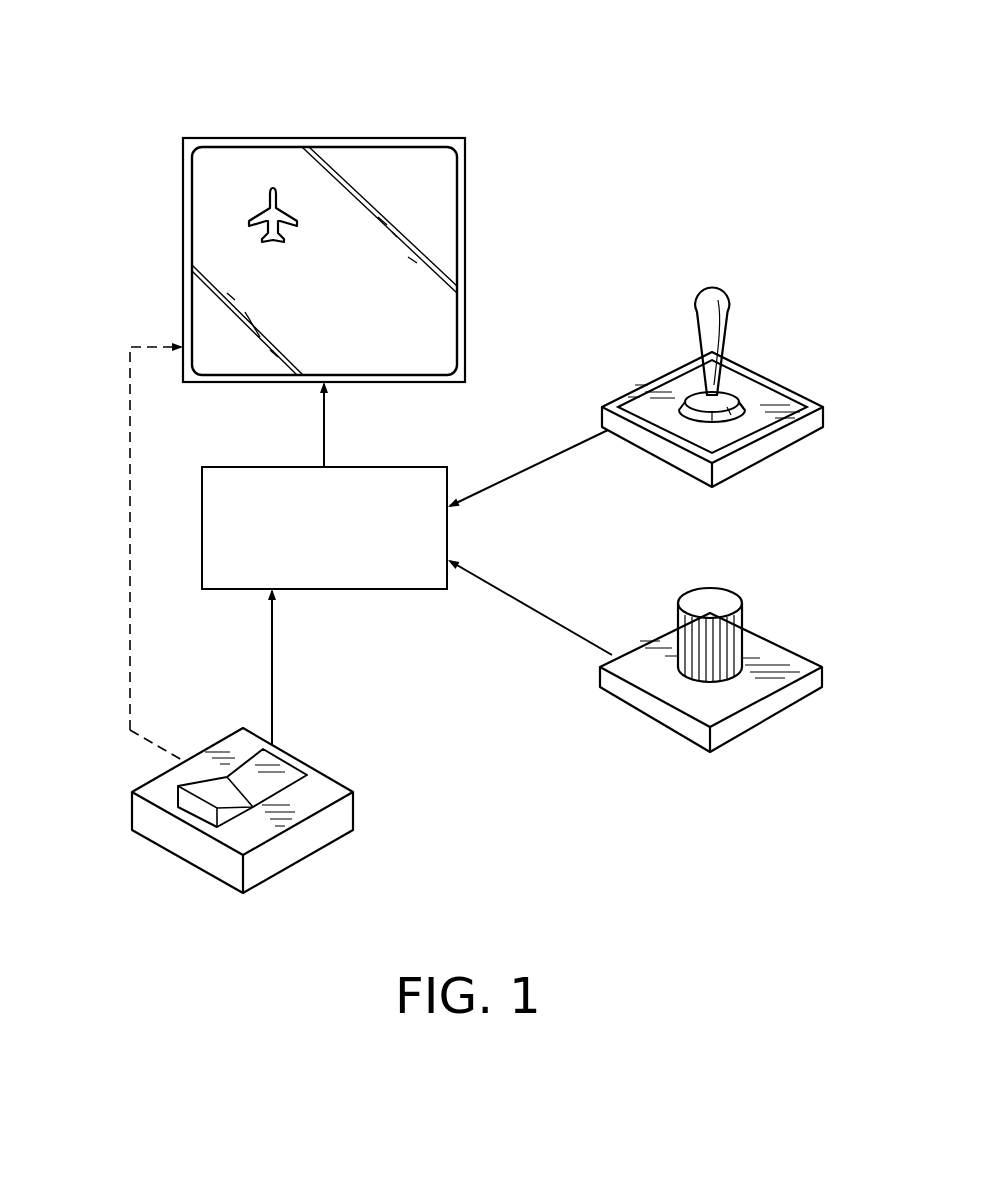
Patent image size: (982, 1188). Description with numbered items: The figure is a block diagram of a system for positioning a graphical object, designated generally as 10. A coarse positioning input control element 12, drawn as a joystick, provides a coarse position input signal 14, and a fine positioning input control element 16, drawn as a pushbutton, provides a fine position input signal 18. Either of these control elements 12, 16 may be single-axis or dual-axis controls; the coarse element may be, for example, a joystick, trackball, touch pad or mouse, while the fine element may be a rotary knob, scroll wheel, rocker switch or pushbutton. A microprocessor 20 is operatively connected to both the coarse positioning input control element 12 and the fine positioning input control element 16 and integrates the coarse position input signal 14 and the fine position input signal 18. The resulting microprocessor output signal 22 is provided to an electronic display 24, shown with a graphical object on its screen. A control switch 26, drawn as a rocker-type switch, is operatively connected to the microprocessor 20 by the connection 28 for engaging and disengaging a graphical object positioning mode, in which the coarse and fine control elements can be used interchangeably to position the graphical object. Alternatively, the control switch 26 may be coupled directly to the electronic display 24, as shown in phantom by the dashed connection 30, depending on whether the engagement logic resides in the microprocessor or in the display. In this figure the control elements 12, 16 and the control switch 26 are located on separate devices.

The system for positioning a graphical object 10 is at (135, 87).
The coarse positioning input control element 12 is at (782, 377).
The coarse position input signal 14 is at (548, 462).
The fine positioning input control element 16 is at (775, 638).
The fine position input signal 18 is at (548, 618).
The microprocessor 20 is at (380, 589).
The microprocessor output signal 22 is at (324, 418).
The electronic display 24 is at (465, 208).
The control switch 26 is at (353, 808).
The connection of control switch to microprocessor 28 is at (272, 660).
The direct coupling of control switch to electronic display 30 is at (130, 493).